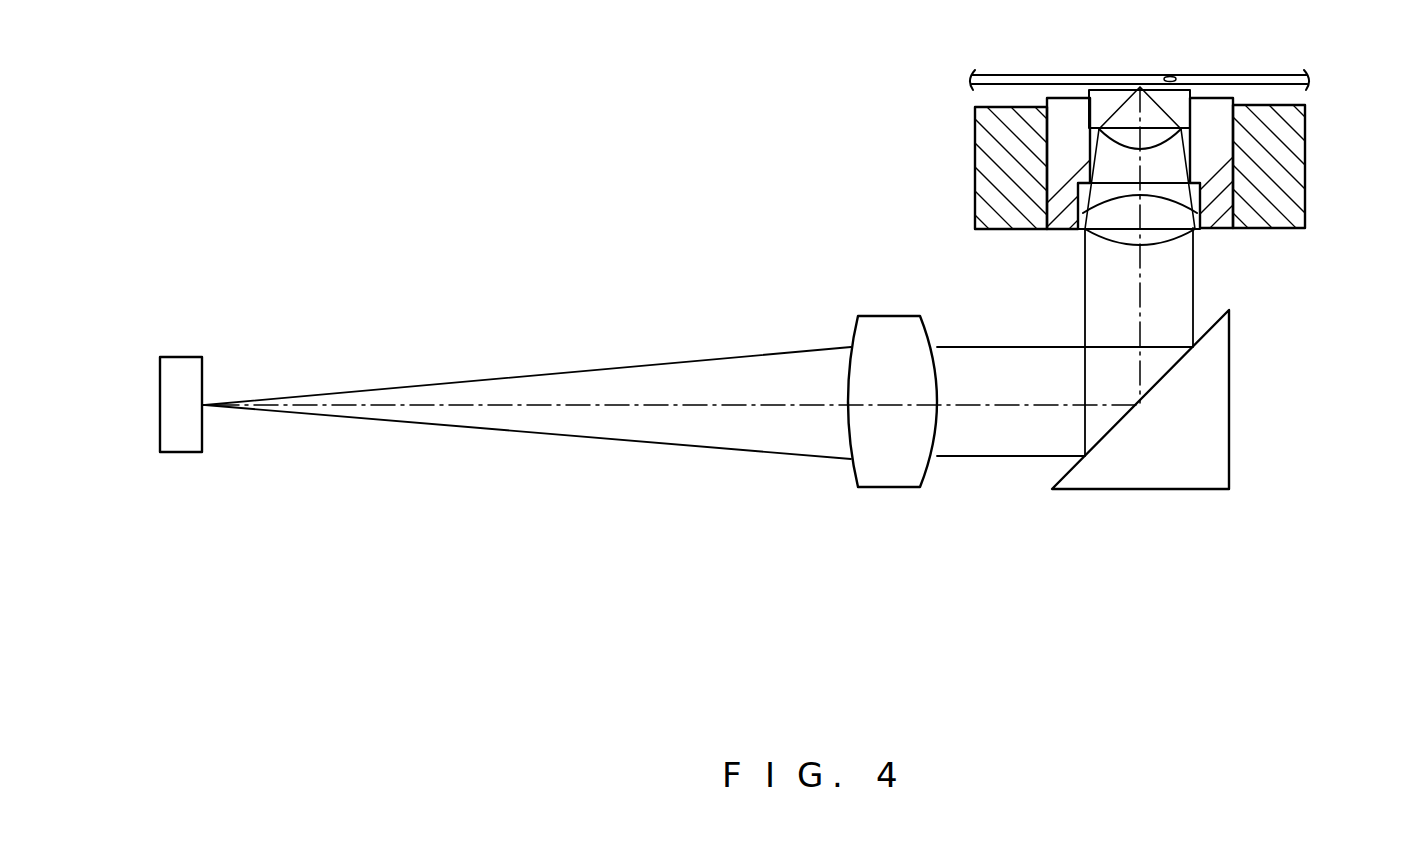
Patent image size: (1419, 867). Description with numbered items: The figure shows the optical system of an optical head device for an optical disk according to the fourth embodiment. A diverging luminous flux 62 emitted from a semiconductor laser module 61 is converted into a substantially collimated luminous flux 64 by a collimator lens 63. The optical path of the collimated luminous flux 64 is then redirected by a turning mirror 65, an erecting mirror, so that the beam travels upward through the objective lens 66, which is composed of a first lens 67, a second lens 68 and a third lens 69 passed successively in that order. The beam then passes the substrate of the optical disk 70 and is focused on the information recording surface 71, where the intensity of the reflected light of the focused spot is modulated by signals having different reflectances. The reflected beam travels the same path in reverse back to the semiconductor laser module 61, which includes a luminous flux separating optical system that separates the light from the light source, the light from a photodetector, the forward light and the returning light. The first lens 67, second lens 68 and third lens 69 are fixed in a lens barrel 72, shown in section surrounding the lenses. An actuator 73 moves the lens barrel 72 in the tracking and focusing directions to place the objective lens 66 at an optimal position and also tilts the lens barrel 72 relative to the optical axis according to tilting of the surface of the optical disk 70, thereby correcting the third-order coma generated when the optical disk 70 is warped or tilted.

The semiconductor laser module 61 is at (185, 447).
The diverging luminous flux 62 is at (413, 383).
The collimator lens 63 is at (884, 481).
The collimated luminous flux 64 is at (993, 458).
The turning mirror 65 is at (1175, 482).
The objective lens 66 is at (1139, 193).
The first lens 67 is at (1233, 228).
The second lens 68 is at (1202, 186).
The third lens 69 is at (1180, 113).
The optical disk 70 is at (1268, 80).
The information recording surface 71 is at (1173, 80).
The lens barrel 72 is at (1057, 220).
The actuator 73 is at (975, 179).